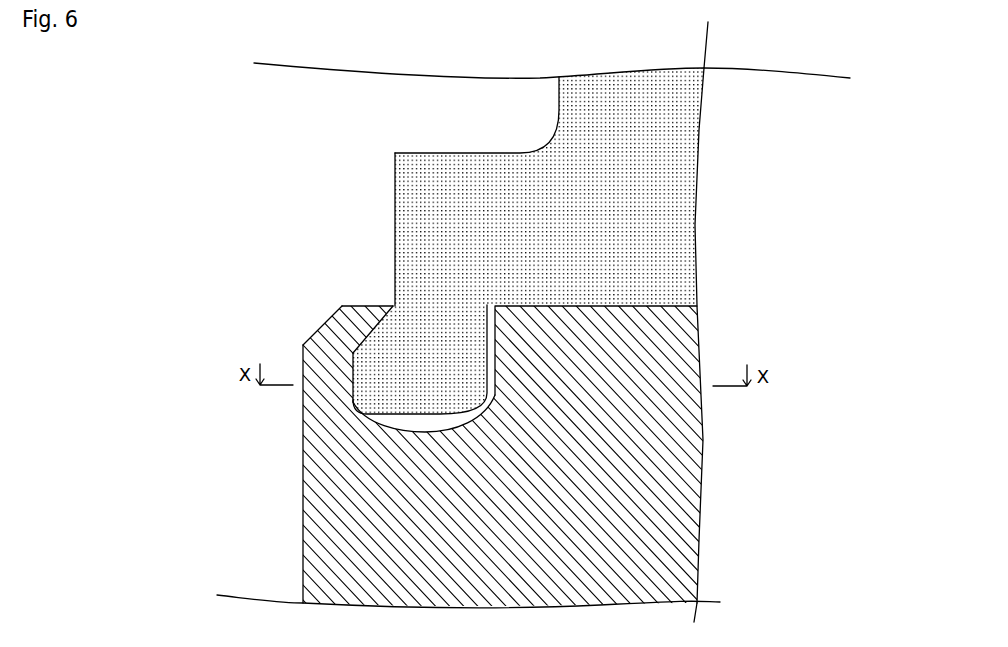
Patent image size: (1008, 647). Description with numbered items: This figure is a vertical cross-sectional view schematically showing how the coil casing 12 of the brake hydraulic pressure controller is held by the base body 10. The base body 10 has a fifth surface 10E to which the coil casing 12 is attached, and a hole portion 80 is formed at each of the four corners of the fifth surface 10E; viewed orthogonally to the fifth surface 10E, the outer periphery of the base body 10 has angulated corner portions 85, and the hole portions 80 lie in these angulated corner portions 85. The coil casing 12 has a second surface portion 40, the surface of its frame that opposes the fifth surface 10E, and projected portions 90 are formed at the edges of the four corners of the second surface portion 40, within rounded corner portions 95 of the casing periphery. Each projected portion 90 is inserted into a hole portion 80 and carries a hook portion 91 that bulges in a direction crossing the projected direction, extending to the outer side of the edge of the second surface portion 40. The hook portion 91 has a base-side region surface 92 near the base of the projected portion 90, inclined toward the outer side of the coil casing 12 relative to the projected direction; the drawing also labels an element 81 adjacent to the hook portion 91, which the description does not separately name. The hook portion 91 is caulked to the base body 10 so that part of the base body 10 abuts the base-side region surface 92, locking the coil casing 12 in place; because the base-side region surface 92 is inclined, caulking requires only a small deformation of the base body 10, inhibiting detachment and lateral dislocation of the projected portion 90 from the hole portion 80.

The base body 10 is at (526, 420).
The fifth surface 10E is at (683, 305).
The coil casing 12 is at (683, 147).
The second surface portion 40 is at (571, 238).
The hole portion 80 is at (350, 404).
The inner side surface of plate 81 is at (350, 382).
The angulated corner portion 85 is at (269, 336).
The projected portion 90 is at (440, 333).
The hook portion 91 is at (385, 370).
The base-side region surface 92 is at (332, 328).
The rounded corner portion 95 is at (677, 200).